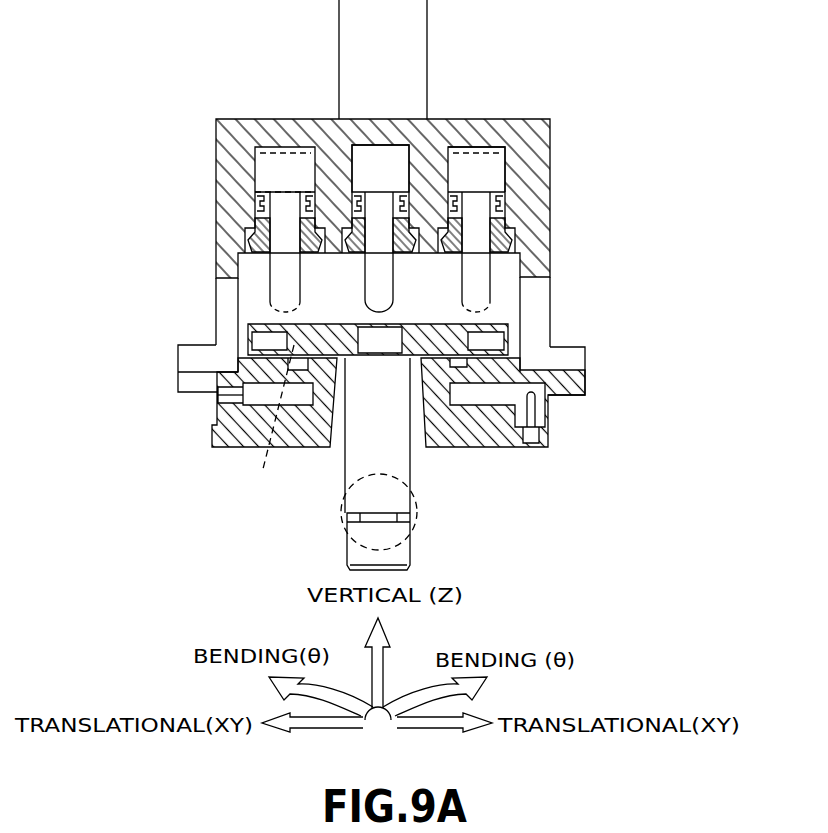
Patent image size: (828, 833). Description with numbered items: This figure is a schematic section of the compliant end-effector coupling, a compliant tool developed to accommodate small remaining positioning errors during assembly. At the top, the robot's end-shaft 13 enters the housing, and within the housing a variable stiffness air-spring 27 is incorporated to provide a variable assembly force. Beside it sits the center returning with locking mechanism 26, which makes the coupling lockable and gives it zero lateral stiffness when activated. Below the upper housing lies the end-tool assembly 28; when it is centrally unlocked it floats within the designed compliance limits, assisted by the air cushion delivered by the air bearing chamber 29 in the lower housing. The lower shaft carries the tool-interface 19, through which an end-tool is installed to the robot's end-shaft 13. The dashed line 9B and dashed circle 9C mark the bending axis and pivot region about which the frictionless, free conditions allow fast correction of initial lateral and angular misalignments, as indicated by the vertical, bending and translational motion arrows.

The robot's end-shaft 13 is at (415, 57).
The variable stiffness air-spring 27 is at (372, 158).
The center returning with locking mechanism 26 is at (487, 173).
The end-tool assembly 28 is at (490, 327).
The air bearing chamber 29 is at (495, 395).
The tool-interface 19 is at (358, 453).
The bending axis 9B is at (268, 424).
The pivot point 9C is at (417, 502).